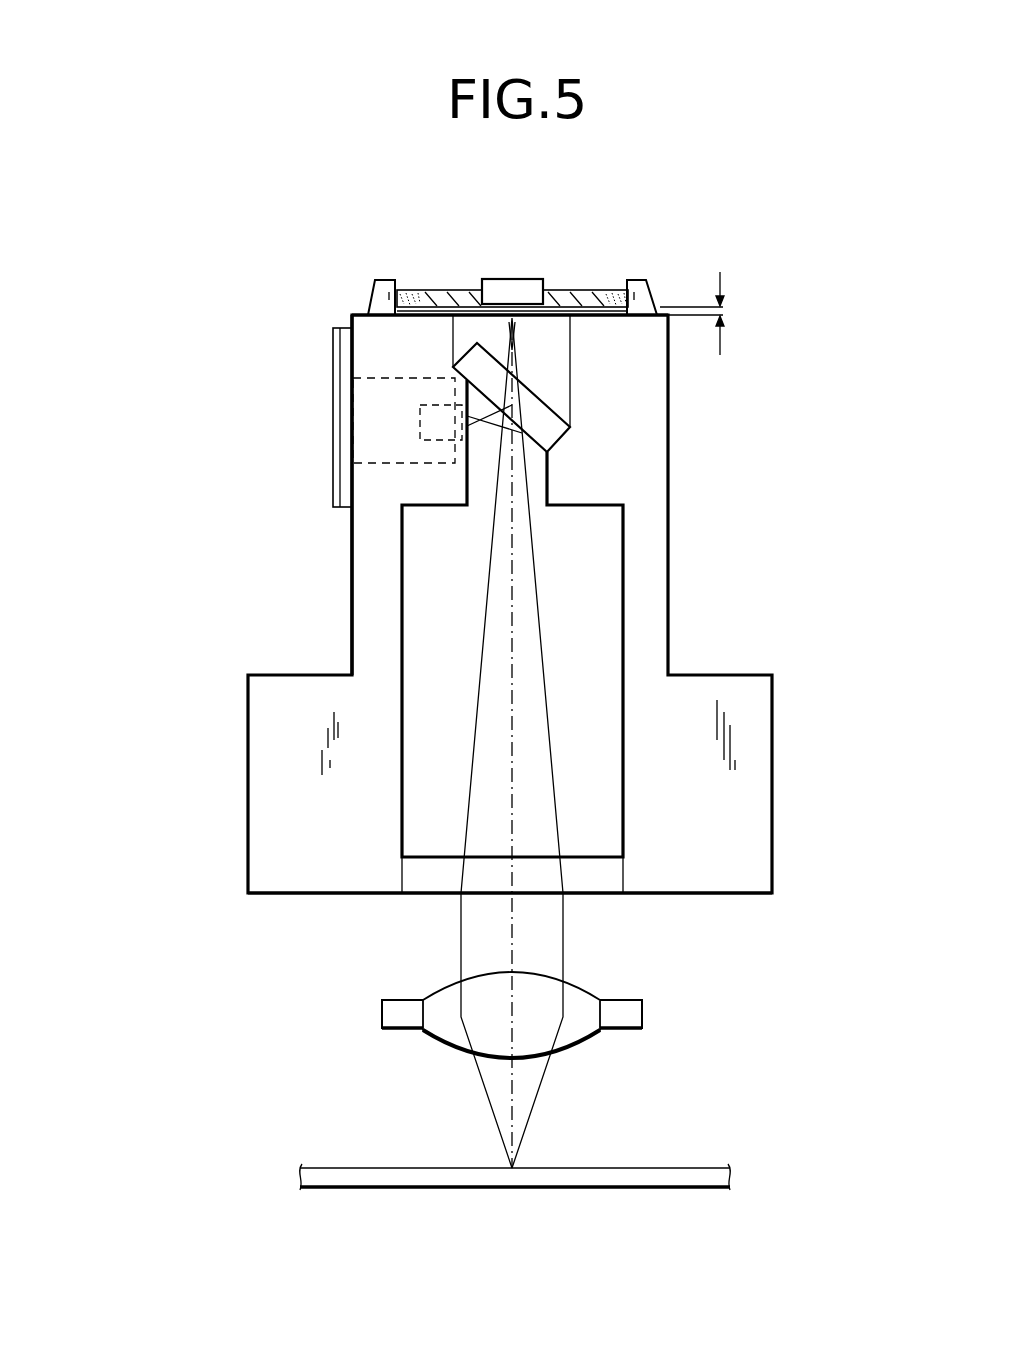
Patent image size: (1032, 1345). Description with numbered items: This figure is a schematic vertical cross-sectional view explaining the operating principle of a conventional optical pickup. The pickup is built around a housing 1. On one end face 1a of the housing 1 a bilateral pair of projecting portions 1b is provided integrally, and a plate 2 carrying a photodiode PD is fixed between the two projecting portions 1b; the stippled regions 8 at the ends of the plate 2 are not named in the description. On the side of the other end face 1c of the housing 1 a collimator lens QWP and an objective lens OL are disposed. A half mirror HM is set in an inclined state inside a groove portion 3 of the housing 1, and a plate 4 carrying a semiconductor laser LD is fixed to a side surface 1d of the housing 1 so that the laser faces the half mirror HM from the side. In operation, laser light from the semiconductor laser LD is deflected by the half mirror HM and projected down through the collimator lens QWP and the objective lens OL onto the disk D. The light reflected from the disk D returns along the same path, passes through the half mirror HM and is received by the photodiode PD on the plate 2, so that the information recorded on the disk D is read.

The housing 1 is at (668, 595).
The one end face 1a is at (584, 318).
The projecting portions 1b is at (370, 295).
The other end face 1c is at (680, 893).
The side surface 1d is at (350, 560).
The plate 2 is at (571, 280).
The groove portion 3 is at (405, 760).
The plate 4 is at (333, 395).
The adhesive 8 is at (407, 294).
The photodiode PD is at (512, 288).
The semiconductor laser LD is at (382, 427).
The half mirror HM is at (546, 438).
The collimator lens QWP is at (430, 900).
The objective lens OL is at (578, 1010).
The disk D is at (575, 1178).